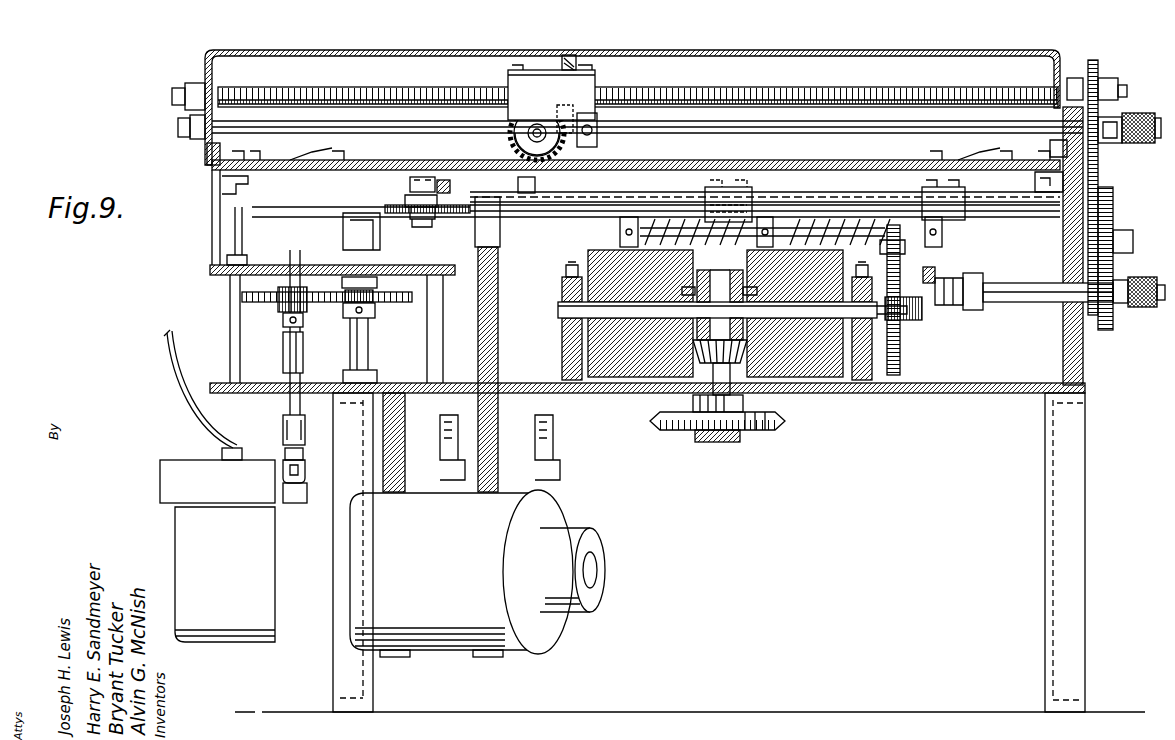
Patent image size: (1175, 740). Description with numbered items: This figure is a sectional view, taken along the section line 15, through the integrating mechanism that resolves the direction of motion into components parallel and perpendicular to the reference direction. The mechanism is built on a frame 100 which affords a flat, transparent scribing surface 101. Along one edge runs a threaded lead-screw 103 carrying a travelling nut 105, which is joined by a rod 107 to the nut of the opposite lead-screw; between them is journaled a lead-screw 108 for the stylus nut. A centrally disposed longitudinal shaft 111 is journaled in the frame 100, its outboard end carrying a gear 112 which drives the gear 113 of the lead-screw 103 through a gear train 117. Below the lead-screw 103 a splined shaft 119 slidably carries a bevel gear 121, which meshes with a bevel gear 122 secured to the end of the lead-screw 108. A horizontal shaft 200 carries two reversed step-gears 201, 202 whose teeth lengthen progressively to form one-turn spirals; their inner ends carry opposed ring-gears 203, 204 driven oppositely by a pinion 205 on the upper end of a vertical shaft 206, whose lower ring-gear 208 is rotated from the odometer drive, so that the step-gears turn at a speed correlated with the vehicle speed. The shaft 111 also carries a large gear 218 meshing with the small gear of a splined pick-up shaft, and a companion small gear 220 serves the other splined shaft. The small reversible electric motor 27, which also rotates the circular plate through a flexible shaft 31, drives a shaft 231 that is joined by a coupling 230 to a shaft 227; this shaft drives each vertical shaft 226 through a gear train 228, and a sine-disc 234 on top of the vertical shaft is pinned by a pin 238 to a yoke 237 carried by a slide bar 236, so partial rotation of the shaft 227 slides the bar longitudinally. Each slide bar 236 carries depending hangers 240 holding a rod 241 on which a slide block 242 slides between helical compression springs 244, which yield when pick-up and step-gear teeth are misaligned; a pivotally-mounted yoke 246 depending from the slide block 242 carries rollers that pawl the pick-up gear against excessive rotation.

The section line 15- 15 is at (468, 180).
The small reversible electric motor 27 is at (477, 573).
The flexible shaft 31 is at (195, 405).
The frame 100 is at (206, 243).
The scribing surface 101 is at (258, 180).
The lead-screw 103 is at (352, 93).
The travelling nut 105 is at (520, 85).
The rod 107 is at (570, 58).
The lead-screw 108 is at (541, 128).
The longitudinally-extending shaft 111 is at (1005, 303).
The gear 112 is at (1115, 332).
The gear 113 is at (1092, 66).
The gear train 117 is at (1105, 192).
The splined shaft 119 is at (248, 130).
The bevel gear 121 is at (593, 160).
The bevel gear 122 is at (510, 150).
The horizontal shaft 200 is at (560, 310).
The step-gear 201 is at (797, 378).
The step-gear 202 is at (603, 345).
The ring-gear 203 is at (768, 418).
The ring-gear 204 is at (705, 345).
The pinion 205 is at (712, 422).
The rotatable vertical shaft 206 is at (680, 428).
The ring-gear 208 is at (690, 443).
The large gear 218 is at (905, 345).
The small gear 220 is at (895, 385).
The vertical rotatable shaft 226 is at (375, 364).
The shaft 227 is at (290, 338).
The gear train 228 is at (246, 290).
The coupling 230 is at (285, 428).
The shaft 231 is at (312, 480).
The sine-disc 234 is at (290, 203).
The slide bar 236 is at (673, 190).
The yoke 237 is at (418, 182).
The pin 238 is at (405, 202).
The hanger 240 is at (618, 232).
The rod 241 is at (906, 250).
The slide block 242 is at (776, 210).
The helical compression spring 244 is at (598, 252).
The pivotally-mounted yoke 246 is at (750, 251).